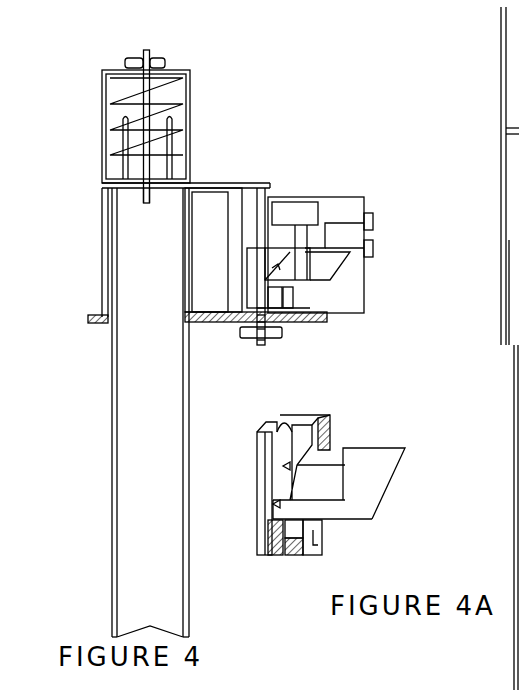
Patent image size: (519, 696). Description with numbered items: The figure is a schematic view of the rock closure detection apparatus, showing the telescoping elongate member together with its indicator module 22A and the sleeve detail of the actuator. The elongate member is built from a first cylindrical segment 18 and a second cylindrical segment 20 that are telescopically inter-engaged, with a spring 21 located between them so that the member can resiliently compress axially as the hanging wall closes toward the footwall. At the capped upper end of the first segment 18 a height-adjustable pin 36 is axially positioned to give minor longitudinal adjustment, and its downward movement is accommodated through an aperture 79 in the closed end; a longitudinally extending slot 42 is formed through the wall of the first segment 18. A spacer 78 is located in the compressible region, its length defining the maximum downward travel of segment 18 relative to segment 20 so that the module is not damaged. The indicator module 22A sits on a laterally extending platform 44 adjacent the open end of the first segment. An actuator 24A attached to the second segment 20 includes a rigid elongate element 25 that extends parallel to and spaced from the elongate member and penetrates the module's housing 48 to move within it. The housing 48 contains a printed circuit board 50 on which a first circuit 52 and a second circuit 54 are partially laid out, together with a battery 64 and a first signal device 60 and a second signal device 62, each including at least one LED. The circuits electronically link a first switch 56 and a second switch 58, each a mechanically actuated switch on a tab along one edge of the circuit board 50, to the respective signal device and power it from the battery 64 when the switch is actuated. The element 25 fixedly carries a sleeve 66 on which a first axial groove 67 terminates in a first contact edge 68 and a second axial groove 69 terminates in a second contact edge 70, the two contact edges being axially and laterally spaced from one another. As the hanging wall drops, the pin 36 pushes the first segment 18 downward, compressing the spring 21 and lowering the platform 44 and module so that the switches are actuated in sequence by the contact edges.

In FIG. 4, the first cylindrical segment 18 is at (102, 220).
In FIG. 4, the second cylindrical segment 20 is at (112, 465).
In FIG. 4, the spring 21 is at (110, 104).
In FIG. 4, the indicator module 22A is at (280, 167).
In FIG. 4, the actuator 24A is at (223, 180).
In FIG. 4, the rigid elongate element 25 is at (258, 227).
In FIG. 4, the height-adjustable pin 36 is at (149, 53).
In FIG. 4, the longitudinally extending slot 42 is at (195, 158).
In FIG. 4, the laterally extending platform 44 is at (88, 323).
In FIG. 4, the housing 48 is at (343, 197).
In FIG. 4, the printed circuit board 50 is at (320, 275).
In FIG. 4A, the printed circuit board 50 is at (365, 498).
In FIG. 4, the first circuit 52 is at (317, 278).
In FIG. 4A, the first circuit 52 is at (337, 503).
In FIG. 4, the second circuit 54 is at (317, 257).
In FIG. 4A, the second circuit 54 is at (367, 462).
In FIG. 4A, the first switch 56 is at (272, 500).
In FIG. 4A, the second switch 58 is at (290, 460).
In FIG. 4, the first signal device 60 is at (378, 247).
In FIG. 4, the second signal device 62 is at (378, 218).
In FIG. 4, the battery 64 is at (290, 215).
In FIG. 4, the sleeve 66 is at (295, 308).
In FIG. 4A, the sleeve 66 is at (333, 412).
In FIG. 4A, the first axial groove 67 is at (268, 428).
In FIG. 4A, the first contact edge 68 is at (270, 527).
In FIG. 4A, the second axial groove 69 is at (297, 442).
In FIG. 4A, the second contact edge 70 is at (303, 553).
In FIG. 4, the spacer 78 is at (130, 163).
In FIG. 4, the aperture 79 is at (140, 195).